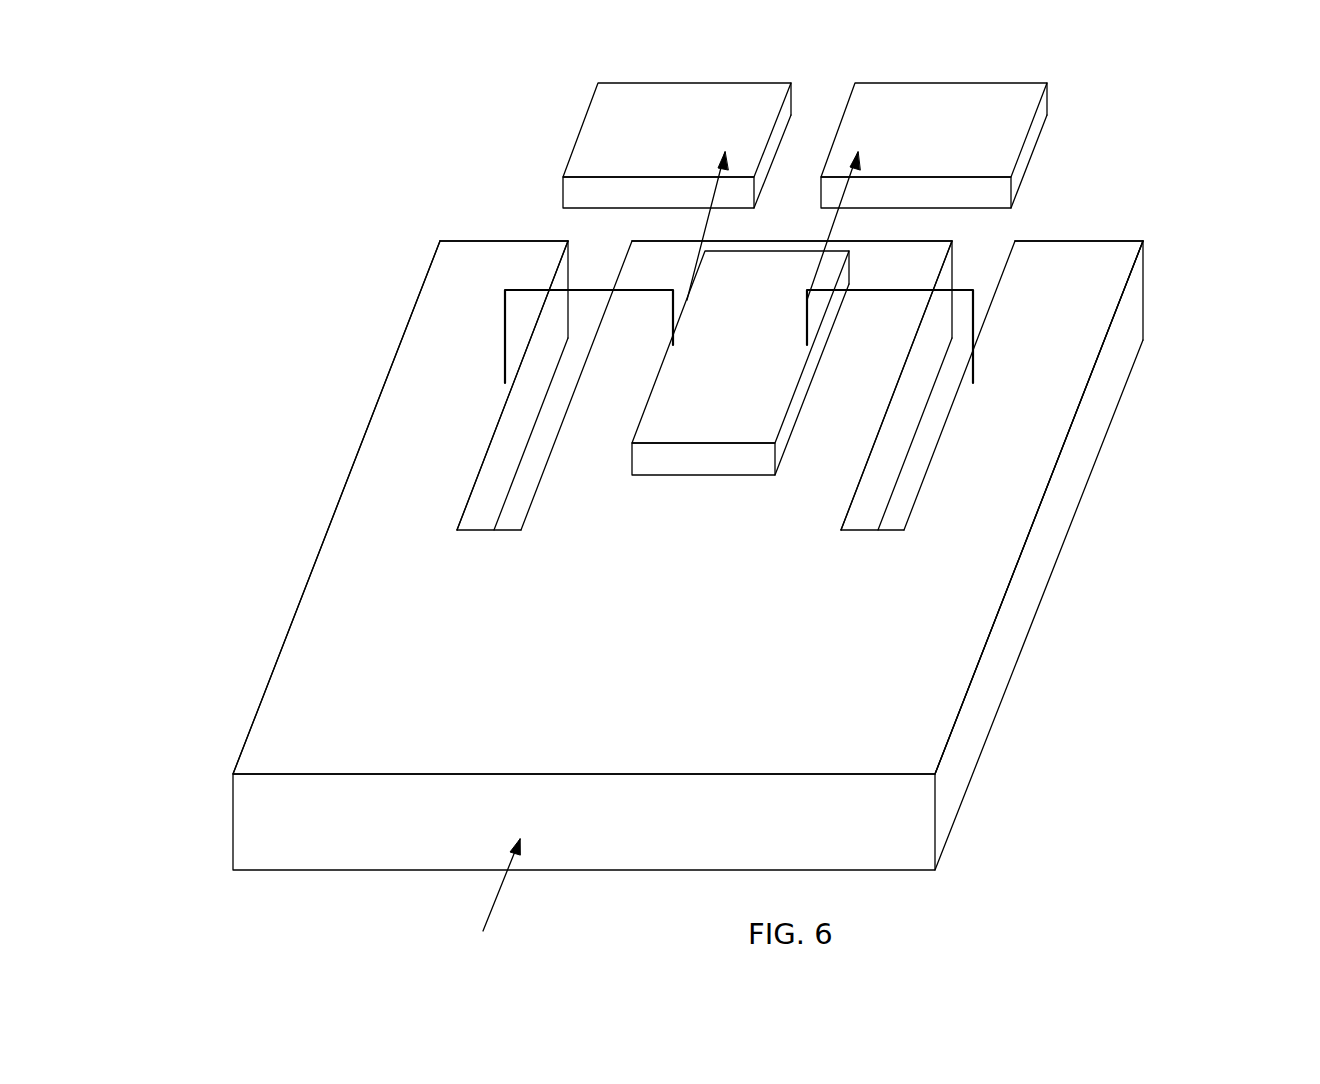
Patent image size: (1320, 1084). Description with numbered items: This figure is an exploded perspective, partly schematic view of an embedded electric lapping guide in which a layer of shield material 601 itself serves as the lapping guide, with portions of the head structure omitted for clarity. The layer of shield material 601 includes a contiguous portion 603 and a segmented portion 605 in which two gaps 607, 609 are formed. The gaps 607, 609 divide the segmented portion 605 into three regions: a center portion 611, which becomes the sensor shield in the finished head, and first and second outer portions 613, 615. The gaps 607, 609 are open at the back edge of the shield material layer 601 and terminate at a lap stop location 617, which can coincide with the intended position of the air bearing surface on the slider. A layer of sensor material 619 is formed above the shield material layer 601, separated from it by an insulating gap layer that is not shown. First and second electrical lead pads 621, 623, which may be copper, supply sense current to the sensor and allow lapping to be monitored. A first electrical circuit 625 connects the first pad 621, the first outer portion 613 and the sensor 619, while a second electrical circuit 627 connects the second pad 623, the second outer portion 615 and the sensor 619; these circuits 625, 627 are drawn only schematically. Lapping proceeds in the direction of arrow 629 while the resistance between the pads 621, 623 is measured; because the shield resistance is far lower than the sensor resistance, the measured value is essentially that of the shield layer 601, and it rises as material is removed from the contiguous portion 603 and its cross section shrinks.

The layer of shield material 601 is at (701, 488).
The contiguous portion 603 is at (298, 711).
The segmented portion 605 is at (364, 515).
The gap 607 is at (593, 258).
The gap 609 is at (983, 257).
The center portion 611 is at (855, 250).
The first outer portion 613 is at (458, 257).
The second outer portion 615 is at (1112, 255).
The lap stop location 617 is at (473, 533).
The layer of sensor material 619 is at (695, 460).
The first electrical lead pad 621 is at (673, 105).
The second electrical lead pad 623 is at (932, 105).
The first electrical circuit 625 is at (712, 195).
The second electrical circuit 627 is at (855, 288).
The arrow 629 is at (502, 892).